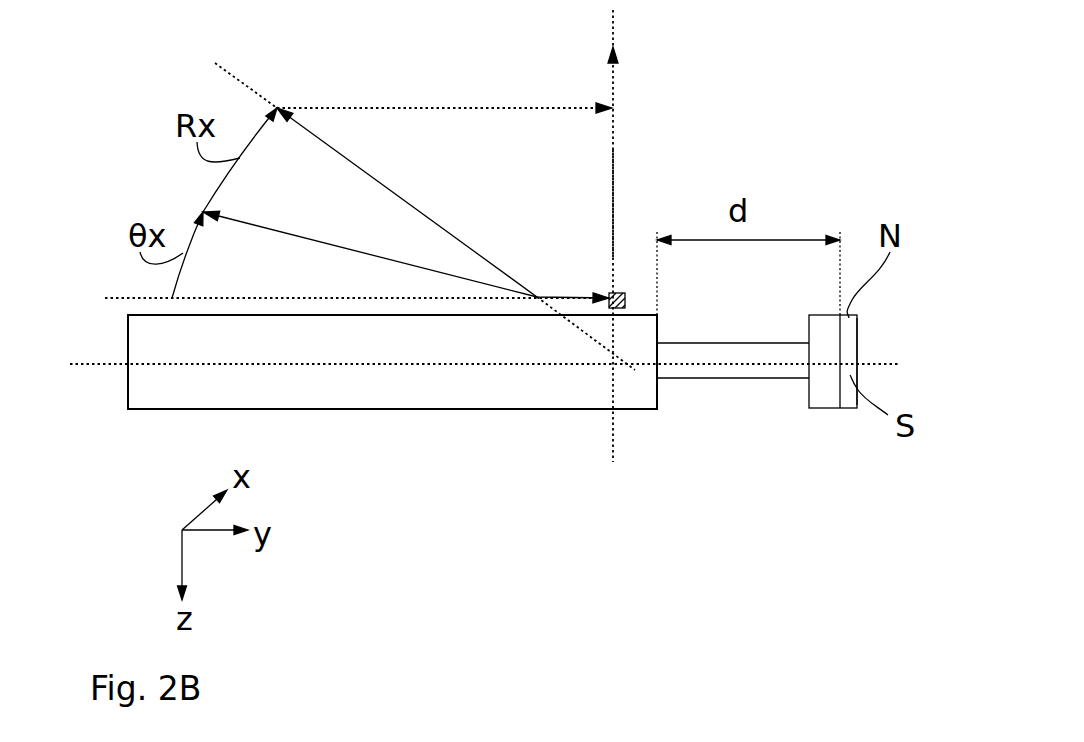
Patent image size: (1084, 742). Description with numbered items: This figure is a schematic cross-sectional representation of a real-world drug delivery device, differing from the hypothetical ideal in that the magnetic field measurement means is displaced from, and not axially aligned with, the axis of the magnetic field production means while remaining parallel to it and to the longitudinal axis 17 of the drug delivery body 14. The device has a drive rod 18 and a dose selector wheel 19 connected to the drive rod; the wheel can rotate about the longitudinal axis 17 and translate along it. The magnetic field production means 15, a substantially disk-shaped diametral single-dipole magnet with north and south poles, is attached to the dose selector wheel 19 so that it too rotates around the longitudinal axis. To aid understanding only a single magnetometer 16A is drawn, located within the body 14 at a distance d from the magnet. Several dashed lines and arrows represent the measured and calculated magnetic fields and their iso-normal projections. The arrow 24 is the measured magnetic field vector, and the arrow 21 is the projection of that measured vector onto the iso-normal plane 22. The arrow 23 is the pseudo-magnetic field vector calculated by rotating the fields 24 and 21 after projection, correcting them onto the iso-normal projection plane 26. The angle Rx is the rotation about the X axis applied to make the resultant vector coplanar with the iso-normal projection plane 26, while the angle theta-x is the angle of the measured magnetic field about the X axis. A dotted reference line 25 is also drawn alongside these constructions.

The drug delivery body 14 is at (158, 409).
The magnetic field production means 15 is at (858, 333).
The magnetometer 16A is at (613, 306).
The longitudinal axis 17 is at (75, 366).
The drive rod 18 is at (727, 380).
The dose selector wheel 19 is at (828, 410).
The projection of the measured magnetic field vector 21 is at (617, 232).
The iso-normal plane 22 is at (615, 259).
The pseudo-magnetic field vector 23 is at (420, 211).
The measured magnetic field vector 24 is at (333, 246).
The horizontal reference line 25 is at (325, 297).
The iso-normal projection plane 26 is at (401, 204).